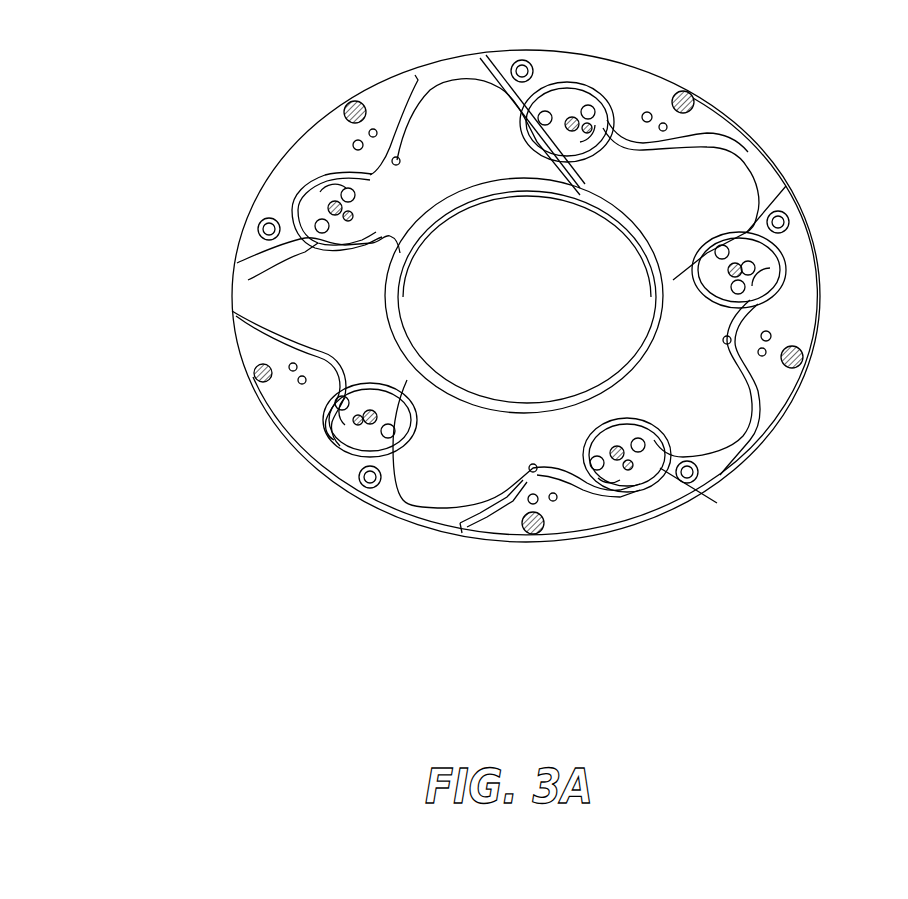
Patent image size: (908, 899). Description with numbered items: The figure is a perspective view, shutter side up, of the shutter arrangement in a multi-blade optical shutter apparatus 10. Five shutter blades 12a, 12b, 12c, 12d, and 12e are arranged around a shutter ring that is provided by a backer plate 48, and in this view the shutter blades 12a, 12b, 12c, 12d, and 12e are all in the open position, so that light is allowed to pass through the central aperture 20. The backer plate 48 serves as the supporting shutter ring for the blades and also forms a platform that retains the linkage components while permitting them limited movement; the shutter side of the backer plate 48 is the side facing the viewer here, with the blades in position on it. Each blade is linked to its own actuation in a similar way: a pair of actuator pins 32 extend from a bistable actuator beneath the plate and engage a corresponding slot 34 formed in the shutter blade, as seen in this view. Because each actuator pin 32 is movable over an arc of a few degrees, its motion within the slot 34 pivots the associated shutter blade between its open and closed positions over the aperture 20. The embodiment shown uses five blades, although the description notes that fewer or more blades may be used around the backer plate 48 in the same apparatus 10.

The optical shutter apparatus 10 is at (89, 69).
The shutter blade 12a is at (733, 413).
The shutter blade 12b is at (427, 490).
The shutter blade 12c is at (266, 293).
The shutter blade 12d is at (453, 97).
The shutter blade 12e is at (737, 172).
The aperture 20 is at (504, 313).
The actuator pin 32 is at (598, 419).
The slot 34 is at (613, 445).
The backer plate 48 is at (257, 397).